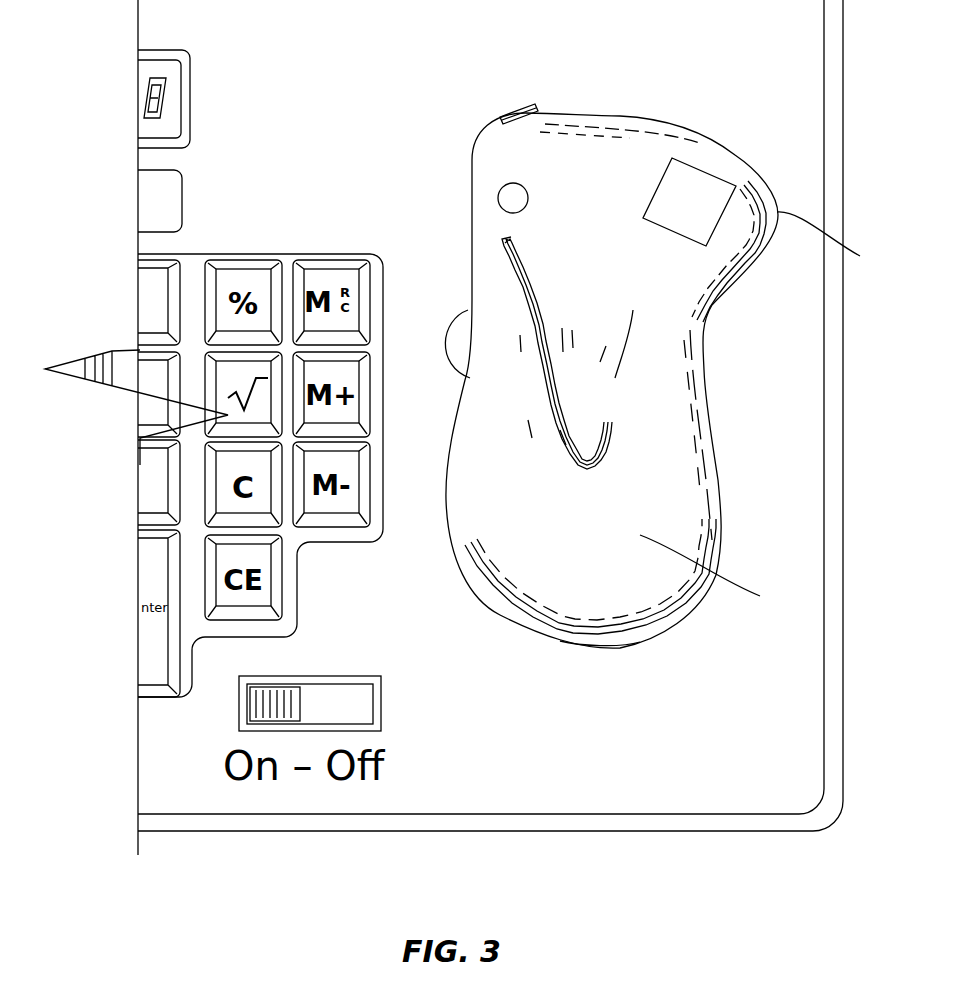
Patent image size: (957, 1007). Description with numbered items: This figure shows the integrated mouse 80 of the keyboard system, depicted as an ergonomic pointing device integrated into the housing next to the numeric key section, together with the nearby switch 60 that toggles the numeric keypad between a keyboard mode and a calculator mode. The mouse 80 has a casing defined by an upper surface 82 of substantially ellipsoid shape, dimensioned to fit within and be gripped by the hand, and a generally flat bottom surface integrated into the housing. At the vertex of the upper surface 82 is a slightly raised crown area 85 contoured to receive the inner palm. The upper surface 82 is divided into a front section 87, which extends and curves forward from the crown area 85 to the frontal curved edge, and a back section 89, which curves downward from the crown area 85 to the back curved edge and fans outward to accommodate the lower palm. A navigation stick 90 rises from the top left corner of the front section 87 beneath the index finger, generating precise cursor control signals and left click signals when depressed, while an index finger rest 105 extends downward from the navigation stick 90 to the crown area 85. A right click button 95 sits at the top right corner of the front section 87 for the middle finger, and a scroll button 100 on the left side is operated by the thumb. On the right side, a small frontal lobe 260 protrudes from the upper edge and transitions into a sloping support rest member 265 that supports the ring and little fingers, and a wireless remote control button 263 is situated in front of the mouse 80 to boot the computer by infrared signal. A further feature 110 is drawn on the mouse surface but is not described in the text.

The switch 60 is at (290, 676).
The integrated mouse 80 is at (646, 107).
The upper surface 82 is at (604, 643).
The crown area 85 is at (718, 573).
The front section 87 is at (728, 150).
The back section 89 is at (690, 616).
The navigation stick 90 is at (510, 198).
The right click button 95 is at (693, 205).
The scroll button 100 is at (458, 338).
The index finger rest 105 is at (720, 443).
The finger groove 110 is at (494, 262).
The frontal lobe 260 is at (846, 244).
The wireless remote control button 263 is at (510, 110).
The support rest member 265 is at (727, 282).